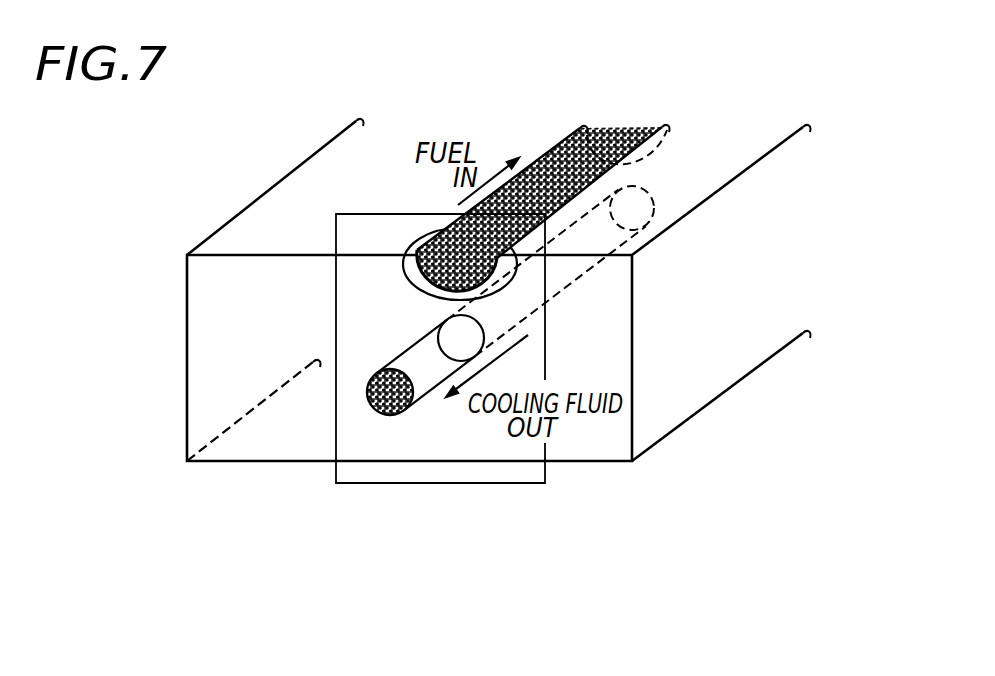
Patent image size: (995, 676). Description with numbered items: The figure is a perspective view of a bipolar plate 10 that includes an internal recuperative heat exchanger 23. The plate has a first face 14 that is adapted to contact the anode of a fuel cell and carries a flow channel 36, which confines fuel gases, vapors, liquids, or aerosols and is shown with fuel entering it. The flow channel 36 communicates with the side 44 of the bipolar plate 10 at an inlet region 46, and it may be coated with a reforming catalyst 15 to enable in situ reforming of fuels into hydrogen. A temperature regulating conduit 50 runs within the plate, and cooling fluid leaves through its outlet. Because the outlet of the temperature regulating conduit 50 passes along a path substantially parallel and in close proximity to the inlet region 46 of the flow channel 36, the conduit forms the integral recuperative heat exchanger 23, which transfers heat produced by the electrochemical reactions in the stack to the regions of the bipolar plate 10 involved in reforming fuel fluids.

The bipolar plate 10 is at (764, 394).
The first face 14 is at (227, 242).
The reforming catalyst 15 is at (557, 183).
The recuperative heat exchanger 23 is at (518, 483).
The flow channel 36 is at (620, 140).
The side 44 is at (258, 437).
The inlet region 46 is at (425, 237).
The temperature regulating conduit 50 is at (373, 408).